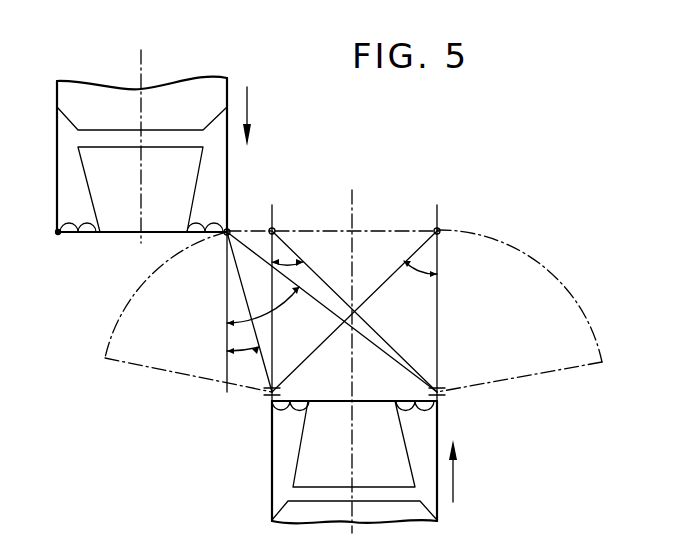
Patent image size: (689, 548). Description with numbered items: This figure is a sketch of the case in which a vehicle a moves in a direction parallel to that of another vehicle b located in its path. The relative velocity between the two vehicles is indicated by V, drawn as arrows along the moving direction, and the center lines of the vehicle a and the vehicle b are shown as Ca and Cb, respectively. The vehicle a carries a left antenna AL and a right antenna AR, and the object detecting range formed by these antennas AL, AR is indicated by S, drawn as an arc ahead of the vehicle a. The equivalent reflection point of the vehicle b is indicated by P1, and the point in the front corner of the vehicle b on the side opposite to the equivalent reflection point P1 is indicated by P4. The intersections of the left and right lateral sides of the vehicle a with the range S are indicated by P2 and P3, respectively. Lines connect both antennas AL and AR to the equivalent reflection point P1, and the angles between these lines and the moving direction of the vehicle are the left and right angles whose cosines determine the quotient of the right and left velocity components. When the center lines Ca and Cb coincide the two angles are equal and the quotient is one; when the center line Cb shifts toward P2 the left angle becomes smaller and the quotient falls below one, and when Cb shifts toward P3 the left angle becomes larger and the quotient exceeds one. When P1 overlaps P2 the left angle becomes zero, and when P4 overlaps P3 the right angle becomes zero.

The other vehicle b is at (170, 196).
The vehicle a is at (385, 469).
The center line of vehicle b Cb is at (142, 78).
The center line of vehicle a Ca is at (353, 205).
The equivalent reflection point P1 is at (226, 235).
The intersection of left lateral side with range S P2 is at (273, 228).
The intersection of right lateral side with range S P3 is at (438, 228).
The front corner point P4 is at (57, 236).
The left antenna AL is at (271, 396).
The right antenna AR is at (440, 390).
The object detecting range S is at (549, 268).
The relative velocity V is at (357, 294).